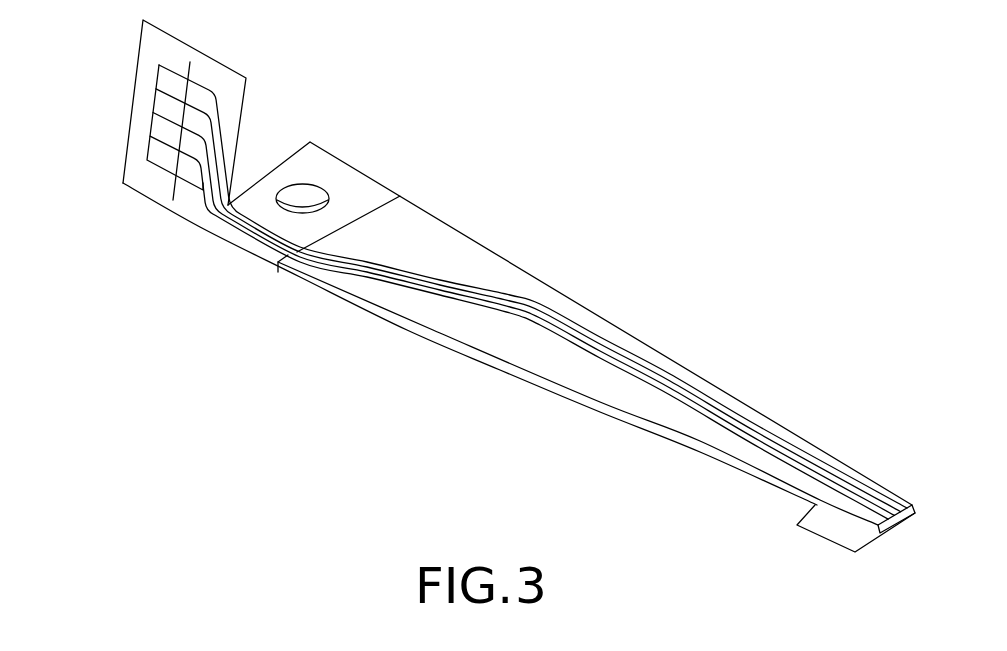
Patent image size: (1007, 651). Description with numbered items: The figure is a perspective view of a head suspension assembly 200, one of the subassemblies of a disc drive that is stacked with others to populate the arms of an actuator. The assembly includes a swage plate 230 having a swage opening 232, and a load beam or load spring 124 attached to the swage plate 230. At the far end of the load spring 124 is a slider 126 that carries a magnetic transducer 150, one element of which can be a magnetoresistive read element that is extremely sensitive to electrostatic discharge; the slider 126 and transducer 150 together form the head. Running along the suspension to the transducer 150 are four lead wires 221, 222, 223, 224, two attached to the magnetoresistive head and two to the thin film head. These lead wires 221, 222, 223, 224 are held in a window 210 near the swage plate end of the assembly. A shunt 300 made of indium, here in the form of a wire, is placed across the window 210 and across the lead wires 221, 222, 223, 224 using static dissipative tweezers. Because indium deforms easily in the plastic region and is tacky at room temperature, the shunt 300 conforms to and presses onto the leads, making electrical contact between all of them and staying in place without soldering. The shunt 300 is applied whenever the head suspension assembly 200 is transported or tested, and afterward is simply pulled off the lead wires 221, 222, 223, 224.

The head suspension assembly 200 is at (668, 182).
The shunt 300 is at (162, 187).
The window 210 is at (207, 100).
The swage plate 230 is at (358, 181).
The swage opening 232 is at (301, 202).
The load spring 124 is at (520, 372).
The lead wire 221 is at (660, 372).
The lead wire 222 is at (604, 345).
The lead wire 223 is at (562, 333).
The lead wire 224 is at (521, 322).
The slider 126 is at (827, 532).
The magnetic transducer 150 is at (890, 525).